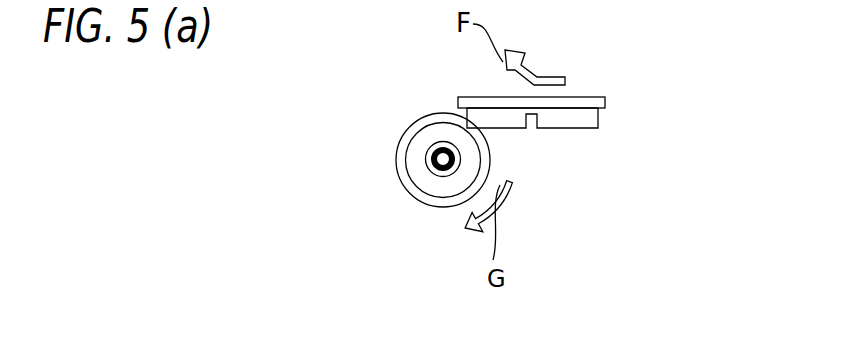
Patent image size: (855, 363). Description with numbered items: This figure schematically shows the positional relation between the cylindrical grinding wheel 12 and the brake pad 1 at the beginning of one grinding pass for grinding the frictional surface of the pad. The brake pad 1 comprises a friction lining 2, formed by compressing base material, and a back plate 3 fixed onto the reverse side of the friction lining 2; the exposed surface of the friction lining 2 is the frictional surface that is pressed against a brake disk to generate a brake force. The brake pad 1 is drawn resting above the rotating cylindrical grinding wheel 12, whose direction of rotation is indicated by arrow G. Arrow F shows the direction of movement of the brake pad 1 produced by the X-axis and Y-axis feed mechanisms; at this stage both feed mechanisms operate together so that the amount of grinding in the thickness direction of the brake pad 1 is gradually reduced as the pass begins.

The brake pad 1 is at (688, 77).
The friction lining 2 is at (598, 117).
The back plate 3 is at (605, 105).
The cylindrical grinding wheel 12 is at (417, 173).